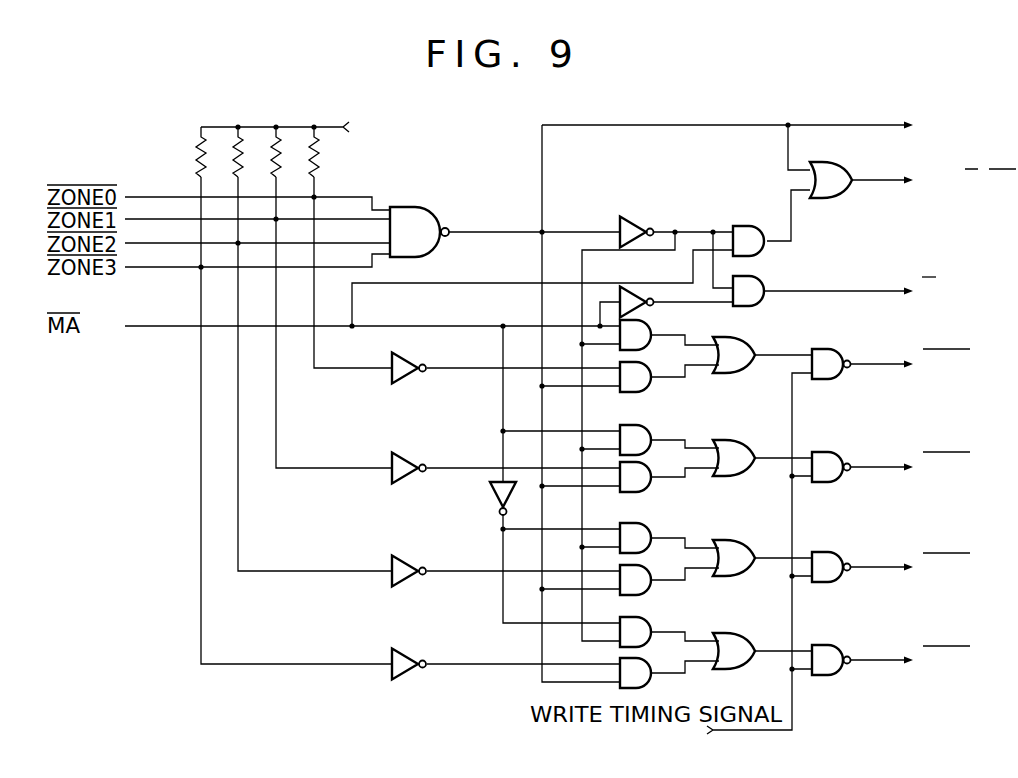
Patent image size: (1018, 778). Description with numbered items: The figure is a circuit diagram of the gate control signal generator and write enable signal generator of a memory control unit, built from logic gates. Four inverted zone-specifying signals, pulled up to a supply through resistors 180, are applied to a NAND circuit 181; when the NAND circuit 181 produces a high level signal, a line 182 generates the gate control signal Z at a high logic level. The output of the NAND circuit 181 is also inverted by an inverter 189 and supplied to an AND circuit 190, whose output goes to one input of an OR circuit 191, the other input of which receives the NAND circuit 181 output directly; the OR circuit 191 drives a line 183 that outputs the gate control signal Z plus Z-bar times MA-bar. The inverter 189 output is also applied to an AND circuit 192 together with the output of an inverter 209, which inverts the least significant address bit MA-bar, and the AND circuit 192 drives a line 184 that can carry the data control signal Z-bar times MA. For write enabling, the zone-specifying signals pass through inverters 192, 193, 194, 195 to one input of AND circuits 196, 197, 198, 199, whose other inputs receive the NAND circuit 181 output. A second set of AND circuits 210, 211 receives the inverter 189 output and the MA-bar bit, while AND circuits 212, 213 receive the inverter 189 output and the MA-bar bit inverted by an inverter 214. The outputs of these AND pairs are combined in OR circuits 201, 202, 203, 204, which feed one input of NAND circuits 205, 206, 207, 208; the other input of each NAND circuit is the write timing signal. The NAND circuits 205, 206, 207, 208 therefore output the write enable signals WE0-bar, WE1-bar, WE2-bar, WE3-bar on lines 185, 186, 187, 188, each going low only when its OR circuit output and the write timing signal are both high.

The pull-up resistors 180 is at (352, 188).
The NAND circuit 181 is at (422, 214).
The line 182 is at (859, 124).
The line 183 is at (877, 178).
The line 184 is at (878, 288).
The line 185 is at (880, 366).
The line 186 is at (880, 469).
The line 187 is at (880, 569).
The line 188 is at (880, 662).
The inverter 189 is at (624, 215).
The AND circuit 190 is at (740, 222).
The OR circuit 191 is at (828, 199).
The AND circuit / inverter 192 is at (769, 272).
The inverter 193 is at (399, 463).
The inverter 194 is at (414, 576).
The inverter 195 is at (407, 674).
The AND circuit 196 is at (651, 382).
The AND circuit 197 is at (651, 482).
The AND circuit 198 is at (651, 583).
The AND circuit 199 is at (645, 672).
The OR circuit 201 is at (740, 351).
The OR circuit 202 is at (740, 444).
The OR circuit 203 is at (740, 546).
The OR circuit 204 is at (740, 642).
The NAND circuit 205 is at (833, 359).
The NAND circuit 206 is at (833, 466).
The NAND circuit 207 is at (833, 561).
The NAND circuit 208 is at (833, 658).
The inverter 209 is at (637, 289).
The AND circuit 210 is at (646, 336).
The AND circuit 211 is at (645, 440).
The AND circuit 212 is at (645, 540).
The AND circuit 213 is at (645, 634).
The inverter 214 is at (493, 493).